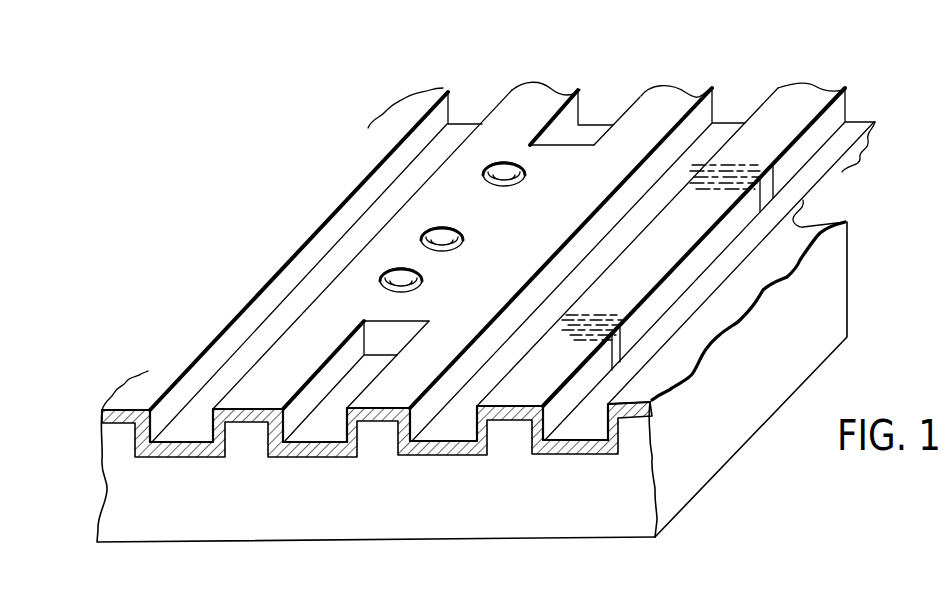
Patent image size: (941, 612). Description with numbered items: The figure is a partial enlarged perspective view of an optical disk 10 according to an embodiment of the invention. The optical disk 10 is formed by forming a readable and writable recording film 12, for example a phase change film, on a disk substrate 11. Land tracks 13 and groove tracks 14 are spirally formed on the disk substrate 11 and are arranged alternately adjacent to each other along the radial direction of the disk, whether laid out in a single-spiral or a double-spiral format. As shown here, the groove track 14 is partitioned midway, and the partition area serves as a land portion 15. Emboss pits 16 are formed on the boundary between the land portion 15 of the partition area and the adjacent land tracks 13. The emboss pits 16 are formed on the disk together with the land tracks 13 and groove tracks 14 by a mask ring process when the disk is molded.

The optical disk 10 is at (865, 104).
The disk substrate 11 is at (625, 517).
The recording film 12 is at (658, 400).
The land track 13 is at (248, 422).
The groove track 14 is at (190, 425).
The land portion 15 is at (418, 260).
The emboss pit 16 is at (422, 303).